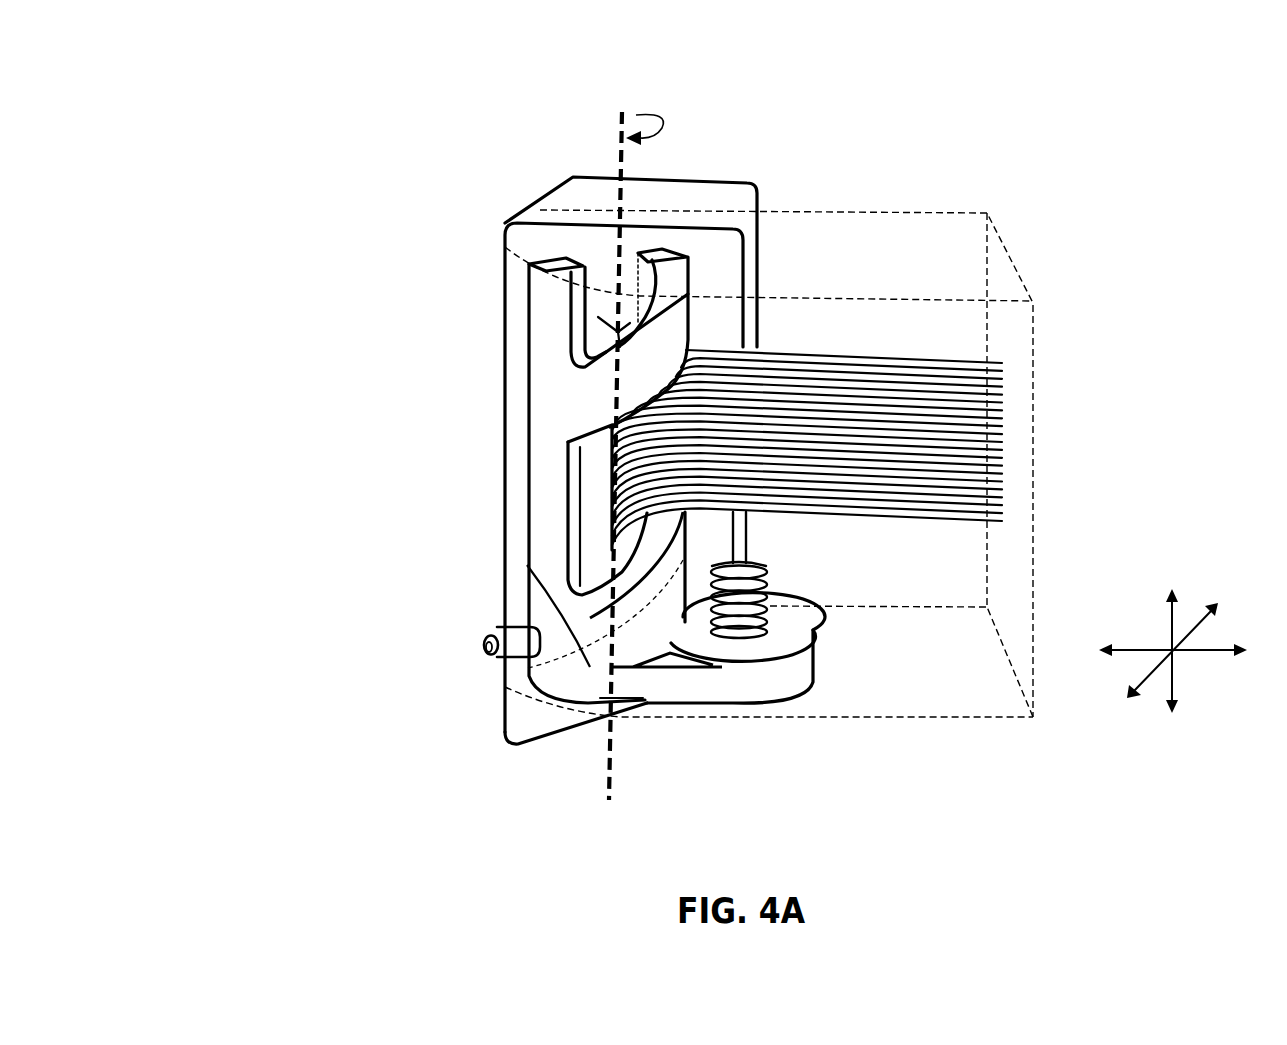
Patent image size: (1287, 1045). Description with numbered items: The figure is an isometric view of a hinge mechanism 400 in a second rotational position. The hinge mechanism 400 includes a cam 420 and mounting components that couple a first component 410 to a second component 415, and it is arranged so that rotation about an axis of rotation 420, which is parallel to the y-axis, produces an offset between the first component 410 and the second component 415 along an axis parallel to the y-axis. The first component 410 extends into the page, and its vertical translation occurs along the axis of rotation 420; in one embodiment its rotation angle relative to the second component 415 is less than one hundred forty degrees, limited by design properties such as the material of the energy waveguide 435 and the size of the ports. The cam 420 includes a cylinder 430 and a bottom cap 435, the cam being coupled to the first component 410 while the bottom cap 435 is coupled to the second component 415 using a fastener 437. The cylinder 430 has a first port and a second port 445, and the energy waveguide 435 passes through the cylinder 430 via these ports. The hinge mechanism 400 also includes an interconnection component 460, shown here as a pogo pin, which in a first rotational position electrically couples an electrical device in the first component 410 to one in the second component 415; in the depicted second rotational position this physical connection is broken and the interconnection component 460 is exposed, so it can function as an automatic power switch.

The hinge mechanism 400 is at (285, 70).
The first component 410 is at (538, 212).
The second component 415 is at (893, 262).
The axis of rotation 420 is at (590, 618).
The cylinder 430 is at (548, 357).
The bottom cap 435 is at (455, 757).
The fastener 437 is at (737, 620).
The second port 445 is at (592, 463).
The interconnection component 460 is at (493, 630).